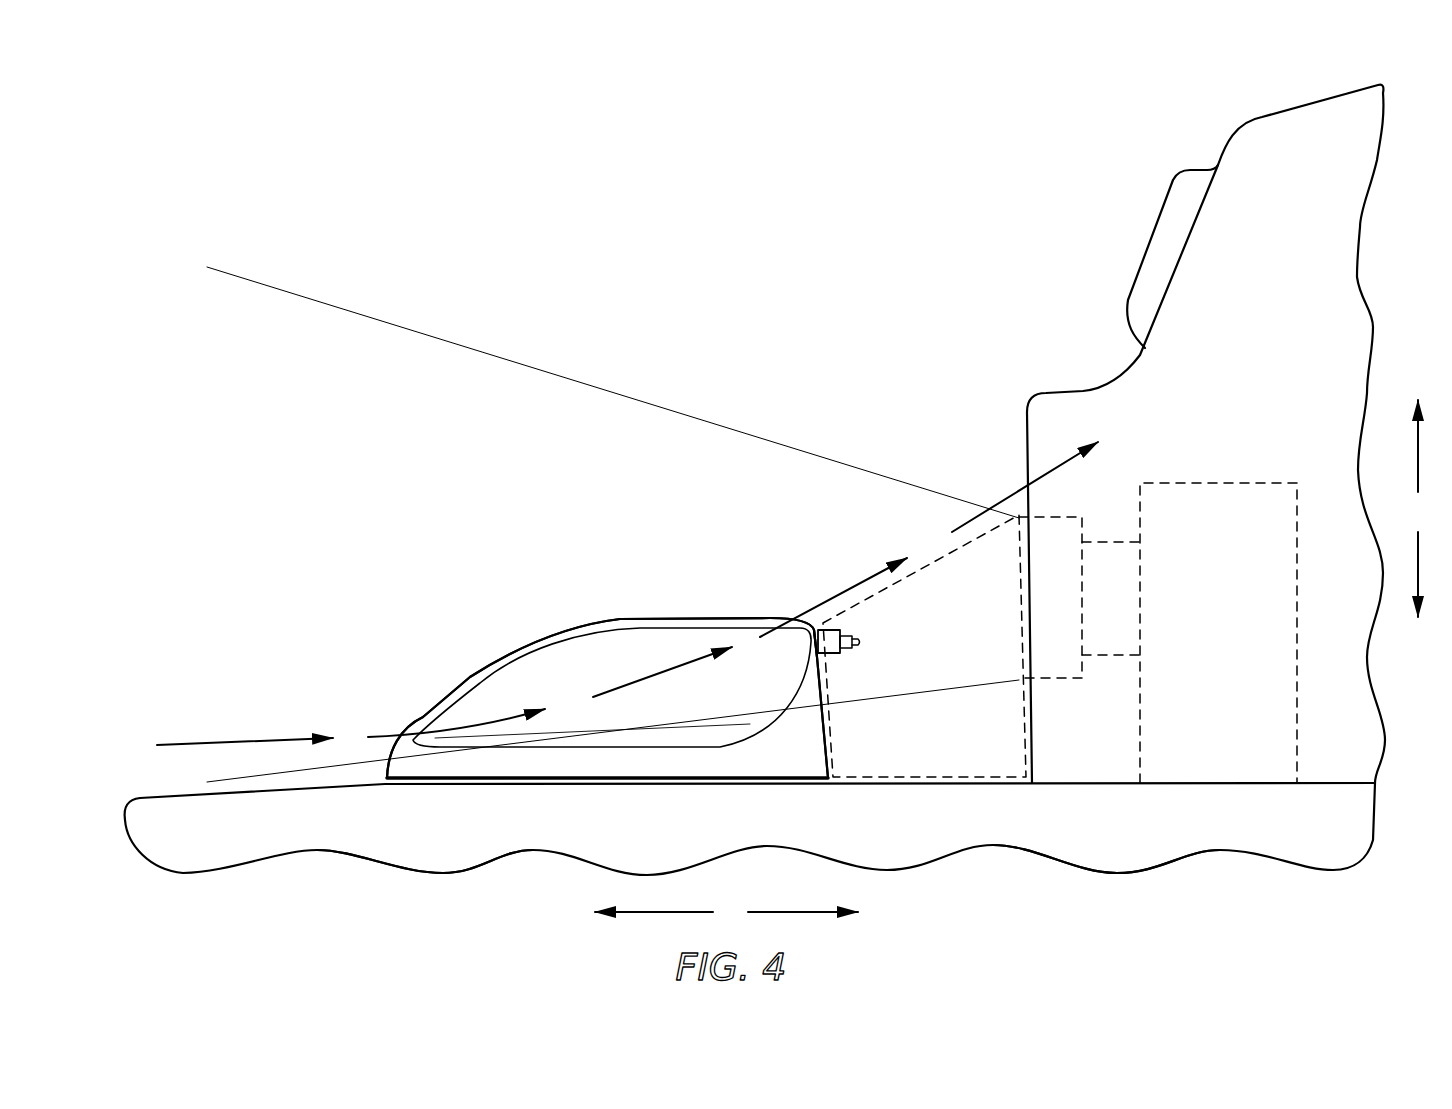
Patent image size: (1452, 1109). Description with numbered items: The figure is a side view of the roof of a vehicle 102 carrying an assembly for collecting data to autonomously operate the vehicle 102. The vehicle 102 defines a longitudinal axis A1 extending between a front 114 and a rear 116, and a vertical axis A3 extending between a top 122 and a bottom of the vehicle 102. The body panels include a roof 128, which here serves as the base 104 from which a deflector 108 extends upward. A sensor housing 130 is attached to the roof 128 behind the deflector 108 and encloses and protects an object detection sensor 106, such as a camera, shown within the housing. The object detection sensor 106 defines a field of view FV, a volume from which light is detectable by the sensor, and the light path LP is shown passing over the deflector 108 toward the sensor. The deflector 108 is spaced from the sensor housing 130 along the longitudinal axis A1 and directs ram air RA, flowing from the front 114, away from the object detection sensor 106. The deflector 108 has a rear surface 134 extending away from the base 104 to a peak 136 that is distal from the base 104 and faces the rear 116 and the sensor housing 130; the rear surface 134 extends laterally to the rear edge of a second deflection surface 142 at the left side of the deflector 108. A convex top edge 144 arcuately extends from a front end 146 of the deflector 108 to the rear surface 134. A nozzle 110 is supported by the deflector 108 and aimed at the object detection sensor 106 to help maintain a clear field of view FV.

The vehicle 102 is at (178, 848).
The base 104 is at (943, 777).
The object detection sensor 106 is at (1233, 470).
The deflector 108 is at (447, 576).
The nozzle 110 is at (823, 626).
The front 114 is at (87, 822).
The rear 116 is at (1419, 820).
The top 122 is at (1100, 840).
The roof 128 is at (400, 842).
The sensor housing 130 is at (1283, 170).
The rear surface 134 is at (822, 723).
The peak 136 is at (822, 620).
The second deflection surface 142 is at (612, 687).
The top edge 144 is at (645, 615).
The front end 146 is at (387, 775).
The field of view FV is at (658, 403).
The light path LP is at (928, 563).
The ram air RA is at (248, 737).
The longitudinal axis A1 is at (726, 912).
The vertical axis A3 is at (1416, 508).